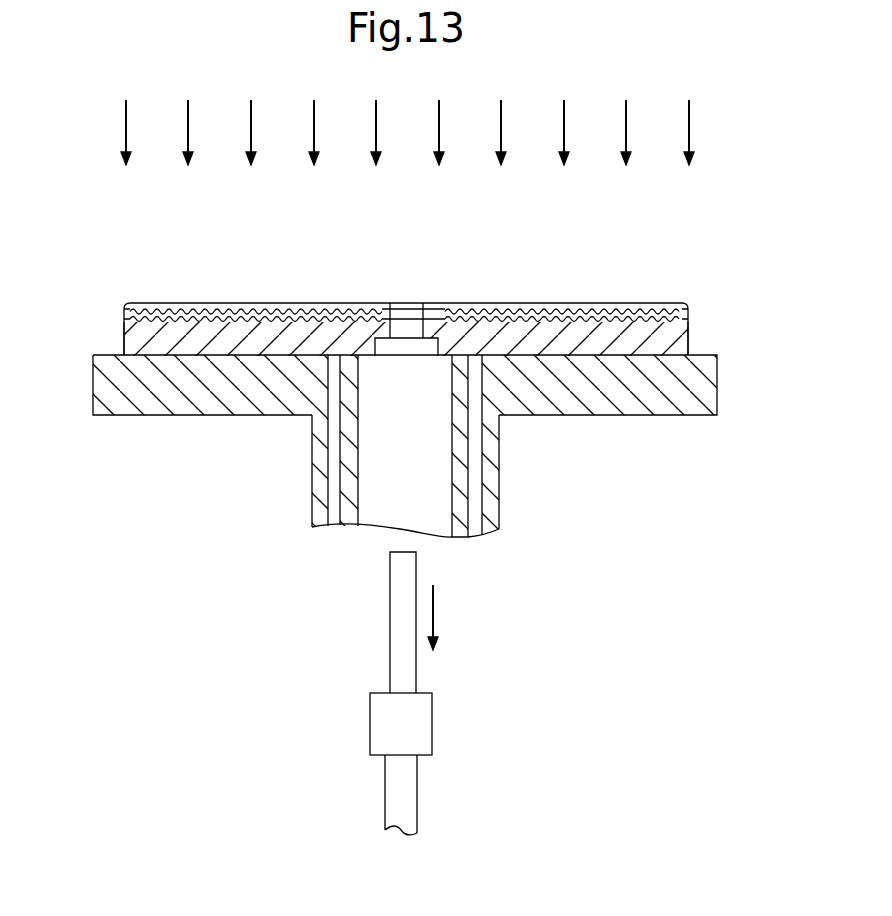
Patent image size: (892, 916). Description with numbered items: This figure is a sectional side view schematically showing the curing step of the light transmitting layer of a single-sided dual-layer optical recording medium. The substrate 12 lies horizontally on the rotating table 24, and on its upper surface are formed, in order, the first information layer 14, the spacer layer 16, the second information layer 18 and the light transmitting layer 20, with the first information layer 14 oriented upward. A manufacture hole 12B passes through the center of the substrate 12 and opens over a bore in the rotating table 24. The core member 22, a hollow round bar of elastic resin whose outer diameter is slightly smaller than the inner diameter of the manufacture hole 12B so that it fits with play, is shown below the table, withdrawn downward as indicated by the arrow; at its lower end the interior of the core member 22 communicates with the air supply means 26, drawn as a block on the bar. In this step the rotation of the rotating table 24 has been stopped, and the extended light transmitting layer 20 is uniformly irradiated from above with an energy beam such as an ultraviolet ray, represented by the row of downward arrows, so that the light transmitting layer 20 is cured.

The substrate 12 is at (690, 343).
The manufacture hole 12B is at (418, 340).
The first information layer 14 is at (250, 313).
The spacer layer 16 is at (689, 321).
The second information layer 18 is at (199, 313).
The light transmitting layer 20 is at (689, 307).
The core member 22 is at (388, 593).
The rotating table 24 is at (718, 397).
The air supply means 26 is at (433, 707).